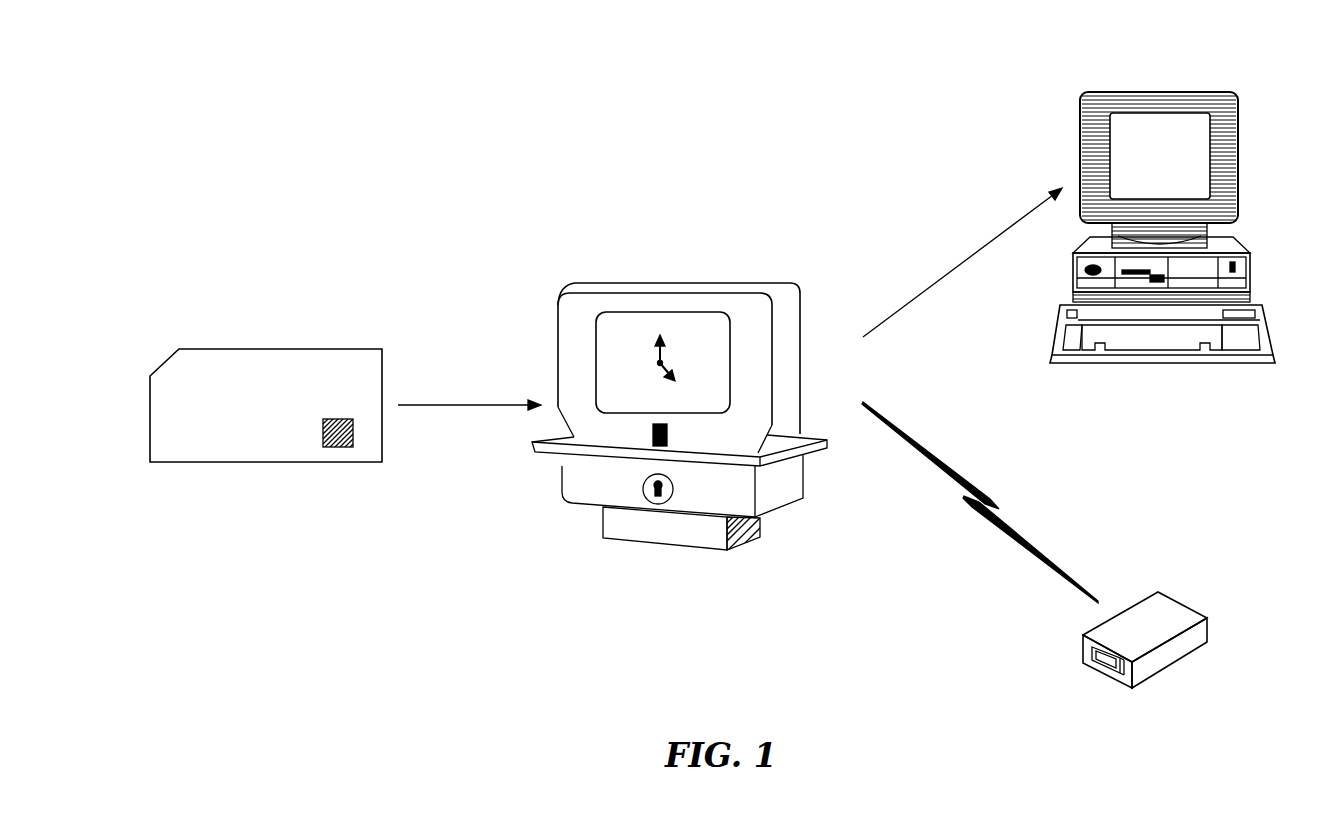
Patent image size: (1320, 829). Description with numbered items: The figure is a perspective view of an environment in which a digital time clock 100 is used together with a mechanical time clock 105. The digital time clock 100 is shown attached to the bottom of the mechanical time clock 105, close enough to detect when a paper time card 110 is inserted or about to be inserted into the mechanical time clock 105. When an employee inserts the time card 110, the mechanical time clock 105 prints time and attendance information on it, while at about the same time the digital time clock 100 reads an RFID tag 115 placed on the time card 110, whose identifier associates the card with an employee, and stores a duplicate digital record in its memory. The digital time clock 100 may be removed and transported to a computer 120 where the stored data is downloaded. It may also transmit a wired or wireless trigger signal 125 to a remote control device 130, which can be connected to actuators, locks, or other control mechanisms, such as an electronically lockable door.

The digital time clock 100 is at (677, 547).
The mechanical time clock 105 is at (687, 283).
The time card 110 is at (248, 349).
The radio frequency identification (RFID) tag 115 is at (322, 448).
The computer 120 is at (1158, 92).
The trigger signal 125 is at (991, 494).
The remote control device 130 is at (1178, 615).